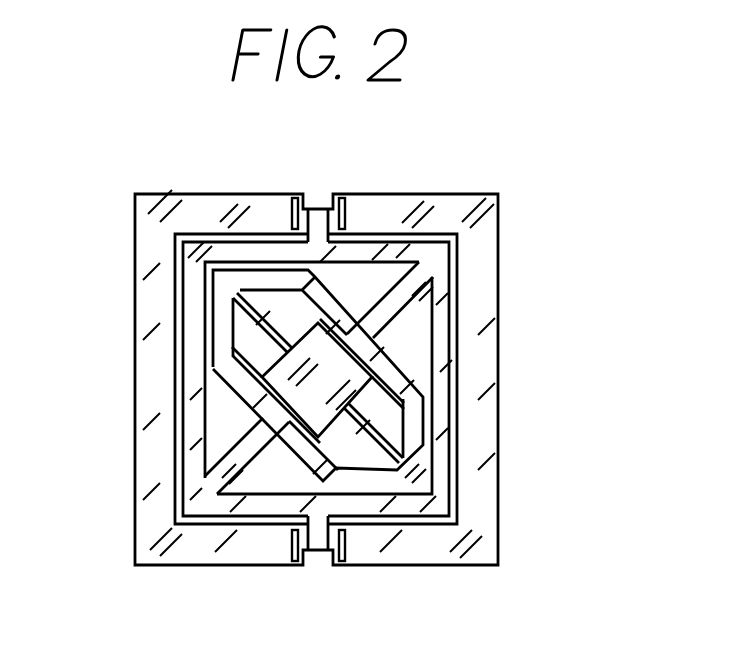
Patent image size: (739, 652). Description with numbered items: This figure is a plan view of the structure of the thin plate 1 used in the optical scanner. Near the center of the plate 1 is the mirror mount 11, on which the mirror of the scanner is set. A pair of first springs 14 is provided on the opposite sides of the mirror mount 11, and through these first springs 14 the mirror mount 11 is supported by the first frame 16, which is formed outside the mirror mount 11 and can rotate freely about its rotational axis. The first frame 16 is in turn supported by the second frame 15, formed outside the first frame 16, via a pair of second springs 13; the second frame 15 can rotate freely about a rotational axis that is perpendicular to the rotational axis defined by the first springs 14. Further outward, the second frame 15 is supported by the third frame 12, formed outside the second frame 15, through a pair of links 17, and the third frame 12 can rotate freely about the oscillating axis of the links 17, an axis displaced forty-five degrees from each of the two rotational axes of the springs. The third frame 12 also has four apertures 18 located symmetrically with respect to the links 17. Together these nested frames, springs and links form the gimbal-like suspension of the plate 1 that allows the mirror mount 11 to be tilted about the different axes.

The plate 1 is at (535, 195).
The mirror mount 11 is at (358, 386).
The third frame 12 is at (250, 208).
The second springs 13 is at (435, 310).
The first springs 14 is at (290, 320).
The second frame 15 is at (192, 282).
The first frame 16 is at (225, 338).
The links 17 is at (319, 226).
The apertures 18 is at (294, 197).